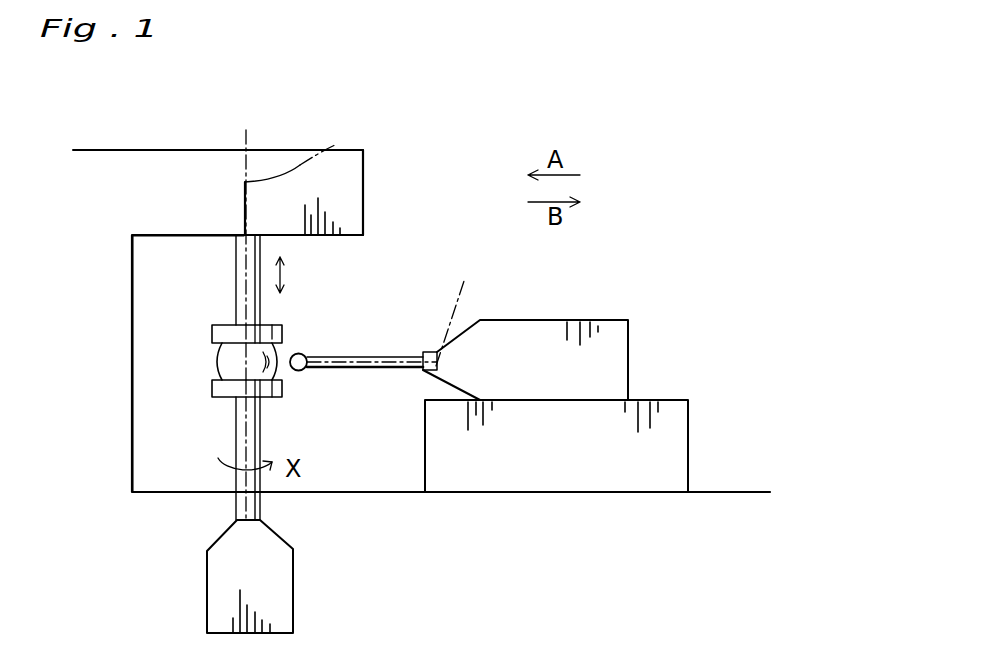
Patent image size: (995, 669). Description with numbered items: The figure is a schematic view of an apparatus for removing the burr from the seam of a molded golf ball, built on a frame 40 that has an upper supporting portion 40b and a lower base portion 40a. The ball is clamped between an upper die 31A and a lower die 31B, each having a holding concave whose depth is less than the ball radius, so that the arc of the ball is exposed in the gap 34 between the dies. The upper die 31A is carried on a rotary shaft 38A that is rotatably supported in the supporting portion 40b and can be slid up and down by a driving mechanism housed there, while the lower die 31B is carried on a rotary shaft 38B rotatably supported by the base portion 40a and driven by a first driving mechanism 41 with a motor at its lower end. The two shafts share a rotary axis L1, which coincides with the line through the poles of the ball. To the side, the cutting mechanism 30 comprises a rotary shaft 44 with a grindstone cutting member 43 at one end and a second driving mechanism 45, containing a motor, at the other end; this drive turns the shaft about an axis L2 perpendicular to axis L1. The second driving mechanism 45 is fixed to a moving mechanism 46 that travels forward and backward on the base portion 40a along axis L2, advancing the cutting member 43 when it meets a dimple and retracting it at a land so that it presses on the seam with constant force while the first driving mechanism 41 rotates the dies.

The cutting mechanism 30 is at (578, 360).
The upper die 31A is at (212, 328).
The lower die 31B is at (213, 393).
The gap 34 is at (214, 352).
The rotary shaft 38A is at (235, 281).
The rotary shaft 38B is at (262, 420).
The frame 40 is at (745, 470).
The base portion 40a is at (335, 505).
The supporting portion 40b is at (353, 173).
The first driving mechanism 41 is at (282, 587).
The cutting member 43 is at (300, 353).
The rotary shaft 44 is at (388, 355).
The second driving mechanism 45 is at (525, 322).
The moving mechanism 46 is at (665, 412).
The rotary axis L1 is at (297, 148).
The axis L2 is at (465, 312).